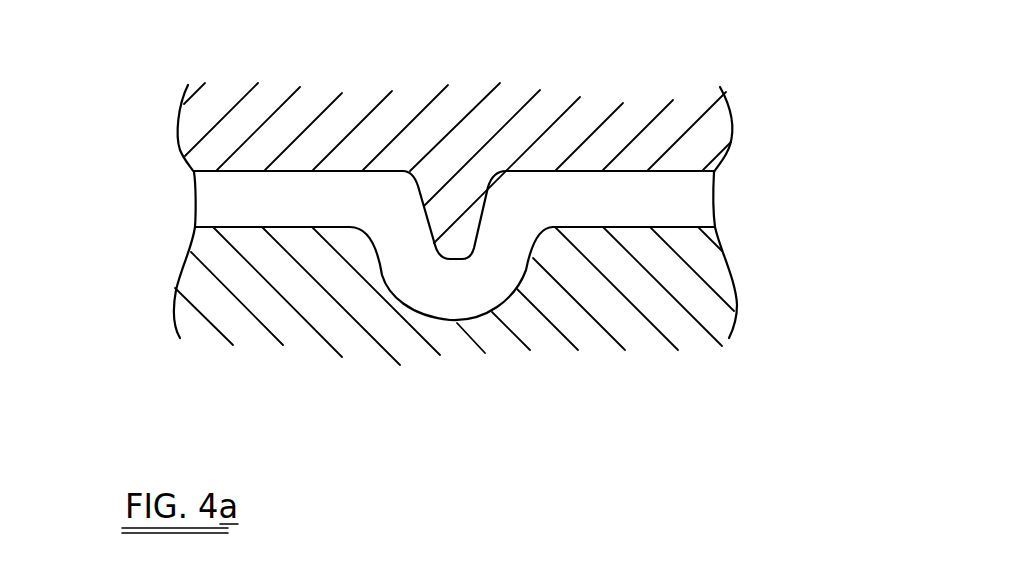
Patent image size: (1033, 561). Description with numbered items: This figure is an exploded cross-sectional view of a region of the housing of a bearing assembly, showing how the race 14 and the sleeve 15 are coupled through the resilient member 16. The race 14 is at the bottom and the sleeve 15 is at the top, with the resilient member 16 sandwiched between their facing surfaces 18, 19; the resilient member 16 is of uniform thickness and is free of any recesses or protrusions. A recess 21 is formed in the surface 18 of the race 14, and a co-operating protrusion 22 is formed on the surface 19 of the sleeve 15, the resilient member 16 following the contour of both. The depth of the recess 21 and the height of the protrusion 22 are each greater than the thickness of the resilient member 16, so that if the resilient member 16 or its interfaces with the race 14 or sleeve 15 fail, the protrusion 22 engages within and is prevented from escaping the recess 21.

The race 14 is at (672, 297).
The sleeve 15 is at (618, 130).
The resilient member 16 is at (482, 239).
The surface of the race 18 is at (394, 337).
The surface of the sleeve 19 is at (394, 136).
The recess 21 is at (455, 321).
The protrusion 22 is at (462, 213).